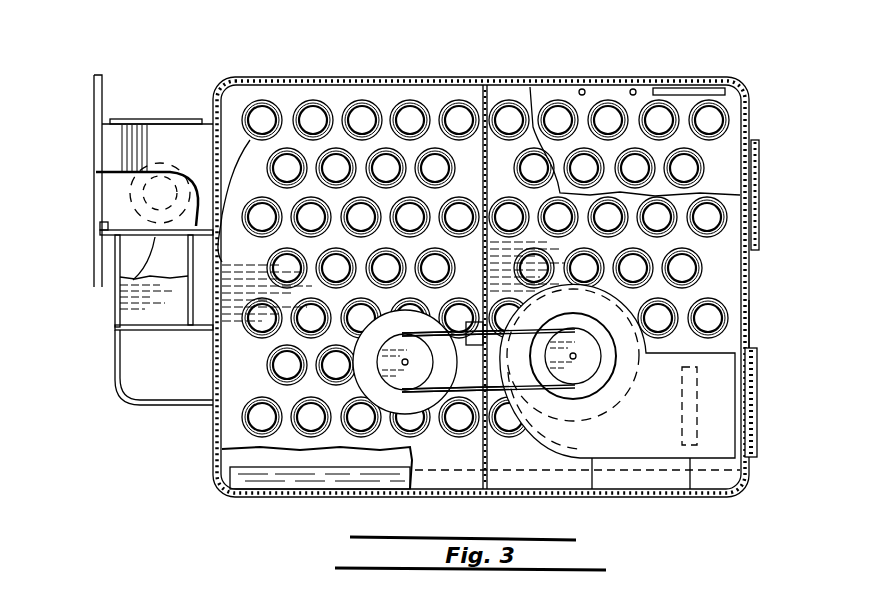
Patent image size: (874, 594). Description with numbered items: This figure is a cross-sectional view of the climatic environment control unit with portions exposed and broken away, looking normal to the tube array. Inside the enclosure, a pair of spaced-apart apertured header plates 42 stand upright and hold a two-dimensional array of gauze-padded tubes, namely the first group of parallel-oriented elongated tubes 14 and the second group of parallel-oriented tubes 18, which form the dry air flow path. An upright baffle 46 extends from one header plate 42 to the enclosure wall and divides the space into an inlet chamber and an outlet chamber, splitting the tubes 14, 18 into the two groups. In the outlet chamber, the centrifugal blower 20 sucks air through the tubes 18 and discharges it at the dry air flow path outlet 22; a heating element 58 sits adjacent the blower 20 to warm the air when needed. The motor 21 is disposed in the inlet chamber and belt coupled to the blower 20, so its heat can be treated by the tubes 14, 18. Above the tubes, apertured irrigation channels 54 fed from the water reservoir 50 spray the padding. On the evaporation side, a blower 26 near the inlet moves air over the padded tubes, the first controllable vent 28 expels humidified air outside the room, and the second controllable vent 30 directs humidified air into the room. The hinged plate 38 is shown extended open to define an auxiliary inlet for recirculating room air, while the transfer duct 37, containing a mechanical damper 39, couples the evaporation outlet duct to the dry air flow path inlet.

The first group of parallel-oriented elongated tubes 14 is at (268, 104).
The second group of parallel-oriented tubes 18 is at (608, 112).
The centrifugal blower 20 is at (650, 411).
The motor 21 is at (421, 402).
The outlet 22 is at (762, 374).
The blower 26 is at (118, 186).
The first controllable vent 28 is at (106, 216).
The second controllable vent 30 is at (760, 203).
The transfer duct 37 is at (128, 374).
The hinged plate 38 is at (152, 120).
The mechanical damper 39 is at (120, 287).
The apertured header plates 42 is at (342, 100).
The baffle 46 is at (490, 96).
The water reservoir 50 is at (307, 488).
The apertured irrigation channels 54 is at (580, 88).
The heating element 58 is at (766, 404).